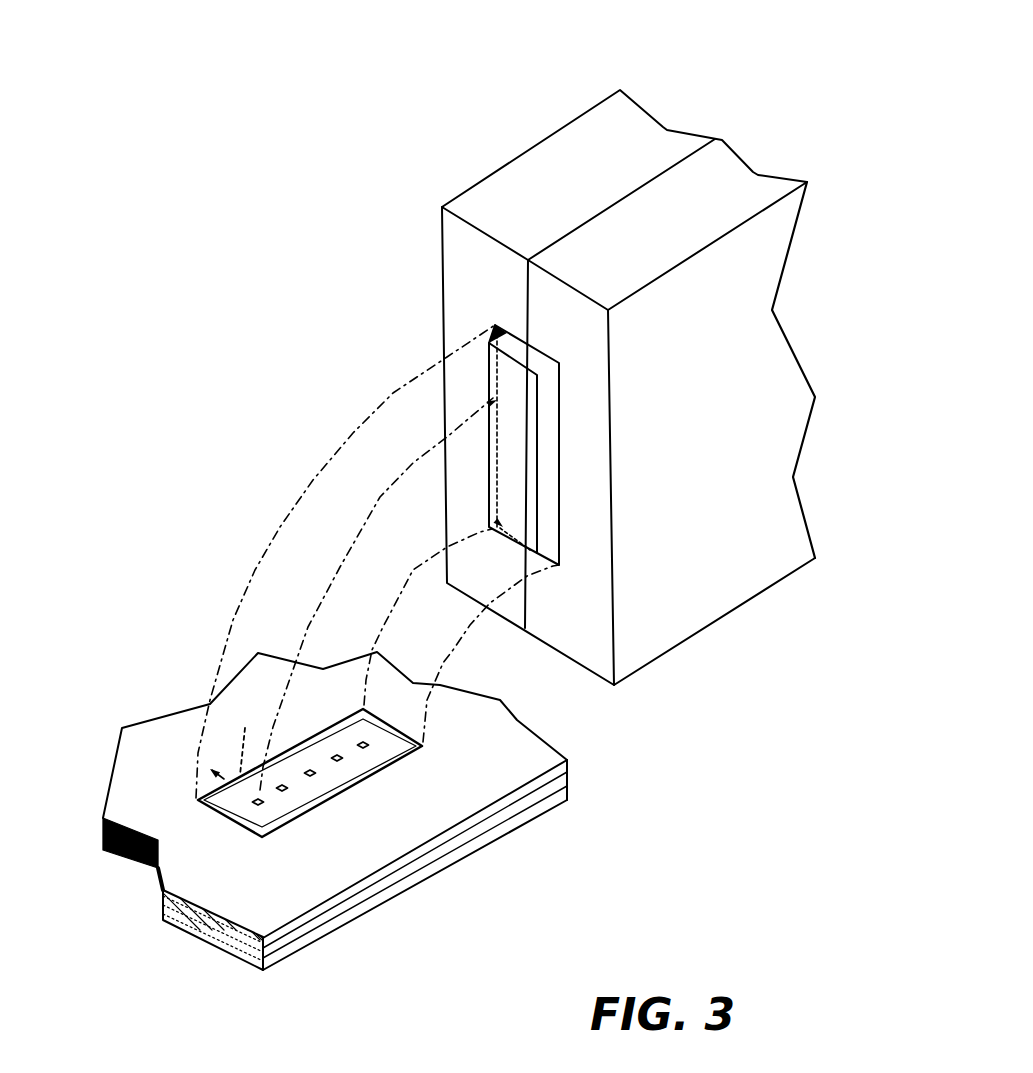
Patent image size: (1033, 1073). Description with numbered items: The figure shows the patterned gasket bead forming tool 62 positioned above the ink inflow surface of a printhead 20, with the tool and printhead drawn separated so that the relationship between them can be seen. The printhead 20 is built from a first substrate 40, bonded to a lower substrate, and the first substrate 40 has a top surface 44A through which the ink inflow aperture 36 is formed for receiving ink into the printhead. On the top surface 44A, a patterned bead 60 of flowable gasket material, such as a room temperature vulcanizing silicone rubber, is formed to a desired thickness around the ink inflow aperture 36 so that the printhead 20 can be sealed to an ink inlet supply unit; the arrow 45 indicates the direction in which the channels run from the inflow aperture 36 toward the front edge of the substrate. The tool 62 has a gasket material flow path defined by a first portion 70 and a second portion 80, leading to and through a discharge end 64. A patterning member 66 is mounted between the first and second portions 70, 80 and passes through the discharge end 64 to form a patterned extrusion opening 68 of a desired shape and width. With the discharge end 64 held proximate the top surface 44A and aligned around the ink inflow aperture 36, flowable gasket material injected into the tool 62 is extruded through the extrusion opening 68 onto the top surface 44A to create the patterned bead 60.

The patterned gasket bead forming tool 62 is at (773, 135).
The first portion 70 is at (467, 280).
The second portion 80 is at (752, 340).
The patterned extrusion opening 68 is at (560, 440).
The patterning member 66 is at (517, 448).
The discharge end 64 is at (580, 643).
The printhead 20 is at (153, 712).
The first substrate 40 is at (487, 813).
The top surface 44A is at (232, 902).
The patterned bead 60 is at (363, 785).
The ink inflow aperture 36 is at (365, 740).
The arrow 45 is at (235, 741).